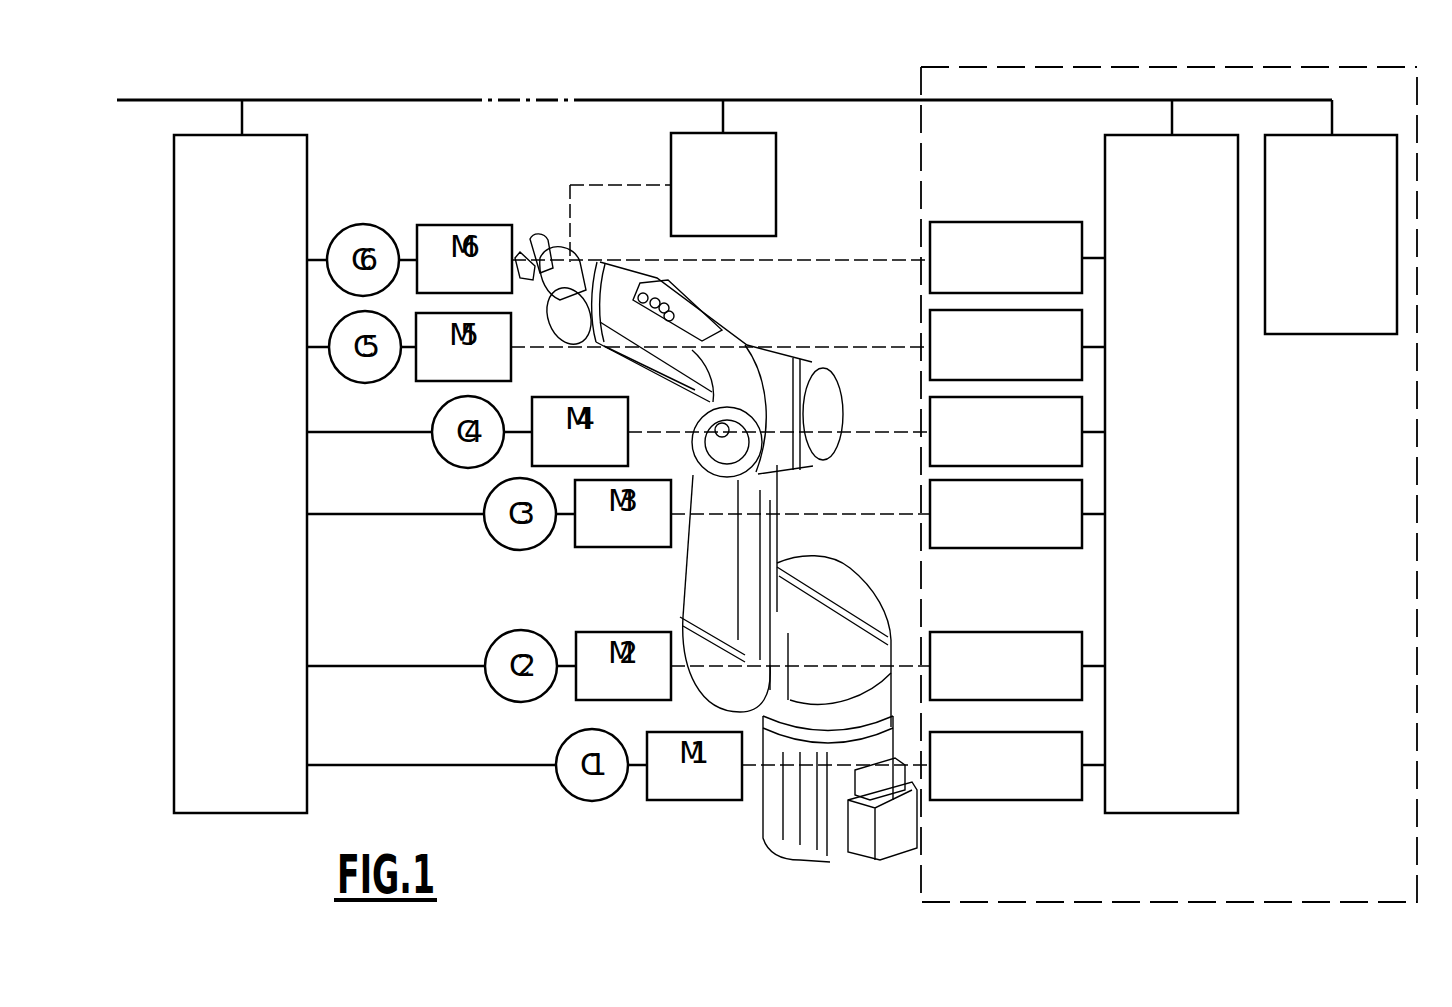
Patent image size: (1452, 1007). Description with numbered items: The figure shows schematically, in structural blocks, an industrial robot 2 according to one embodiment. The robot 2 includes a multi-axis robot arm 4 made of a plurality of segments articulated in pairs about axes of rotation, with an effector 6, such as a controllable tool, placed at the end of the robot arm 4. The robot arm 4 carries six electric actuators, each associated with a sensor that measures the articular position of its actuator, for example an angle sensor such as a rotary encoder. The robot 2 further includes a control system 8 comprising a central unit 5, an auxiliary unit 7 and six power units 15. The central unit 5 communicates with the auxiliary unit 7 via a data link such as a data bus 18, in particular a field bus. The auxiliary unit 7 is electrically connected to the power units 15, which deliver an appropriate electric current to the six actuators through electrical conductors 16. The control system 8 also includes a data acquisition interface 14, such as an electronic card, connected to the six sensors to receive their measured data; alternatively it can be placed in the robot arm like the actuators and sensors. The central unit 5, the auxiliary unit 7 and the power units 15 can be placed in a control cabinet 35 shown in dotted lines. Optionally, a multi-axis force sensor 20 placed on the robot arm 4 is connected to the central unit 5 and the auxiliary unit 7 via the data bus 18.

The industrial robot 2 is at (865, 85).
The multi-axis robot arm 4 is at (716, 516).
The central unit 5 is at (1363, 135).
The effector 6 is at (565, 235).
The auxiliary unit 7 is at (1240, 548).
The control system 8 is at (1090, 55).
The data acquisition interface 14 is at (172, 248).
The power units 15 is at (1017, 511).
The electrical conductors 16 is at (905, 252).
The data bus 18 is at (432, 100).
The multi-axis force sensor 20 is at (780, 150).
The control cabinet 35 is at (1210, 65).